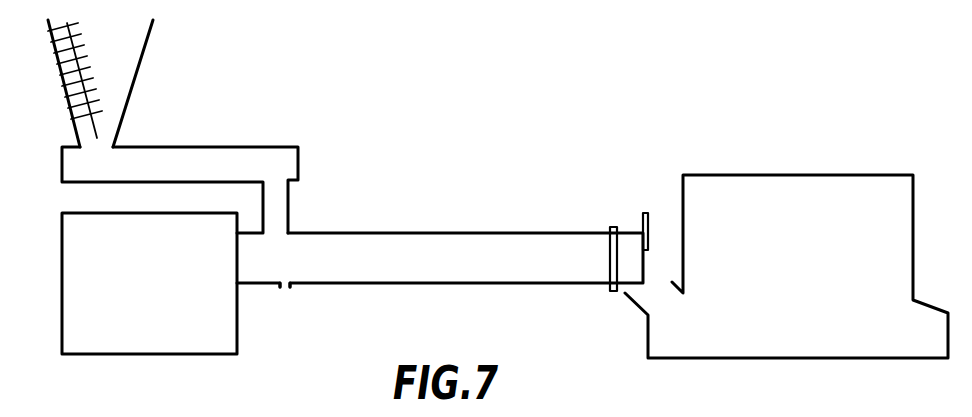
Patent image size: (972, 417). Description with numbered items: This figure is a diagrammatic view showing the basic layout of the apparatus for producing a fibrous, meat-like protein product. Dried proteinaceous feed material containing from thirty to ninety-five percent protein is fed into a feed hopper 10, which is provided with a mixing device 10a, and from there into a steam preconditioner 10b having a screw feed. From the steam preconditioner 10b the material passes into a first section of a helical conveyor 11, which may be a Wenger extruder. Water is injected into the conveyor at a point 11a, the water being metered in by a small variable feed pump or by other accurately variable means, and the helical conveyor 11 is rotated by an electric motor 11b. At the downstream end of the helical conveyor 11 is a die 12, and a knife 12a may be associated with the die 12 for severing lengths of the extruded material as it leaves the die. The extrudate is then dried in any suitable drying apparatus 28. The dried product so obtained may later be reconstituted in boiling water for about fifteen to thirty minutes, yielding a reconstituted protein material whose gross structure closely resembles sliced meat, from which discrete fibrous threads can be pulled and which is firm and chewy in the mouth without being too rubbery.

The feed hopper 10 is at (135, 77).
The mixing device 10a is at (69, 103).
The steam preconditioner 10b is at (222, 147).
The helical conveyor 11 is at (440, 233).
The water injection point 11a is at (283, 286).
The electric motor 11b is at (166, 333).
The die 12 is at (632, 250).
The knife 12a is at (650, 223).
The drying apparatus 28 is at (799, 192).